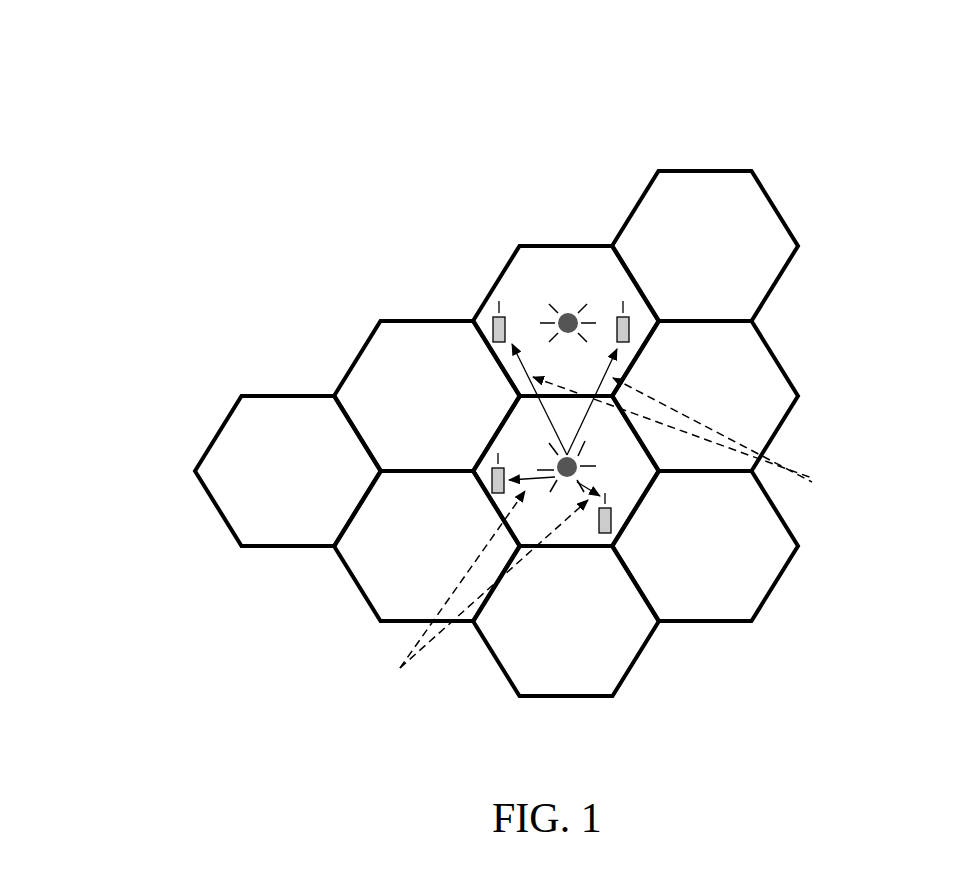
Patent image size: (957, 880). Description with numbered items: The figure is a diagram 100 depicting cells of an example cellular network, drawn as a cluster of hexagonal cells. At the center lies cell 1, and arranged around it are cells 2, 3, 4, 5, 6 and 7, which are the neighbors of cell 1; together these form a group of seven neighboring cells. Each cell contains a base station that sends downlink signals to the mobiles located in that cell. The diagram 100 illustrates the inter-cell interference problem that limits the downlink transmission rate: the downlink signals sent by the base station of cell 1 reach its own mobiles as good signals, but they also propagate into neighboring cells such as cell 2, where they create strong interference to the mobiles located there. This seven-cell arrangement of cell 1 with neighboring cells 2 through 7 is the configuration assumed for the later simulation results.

The diagram 100 is at (93, 60).
The cell 1 is at (566, 445).
The cell 2 is at (566, 321).
The cell 3 is at (705, 396).
The cell 4 is at (705, 546).
The cell 5 is at (566, 621).
The cell 6 is at (427, 546).
The cell 7 is at (427, 396).